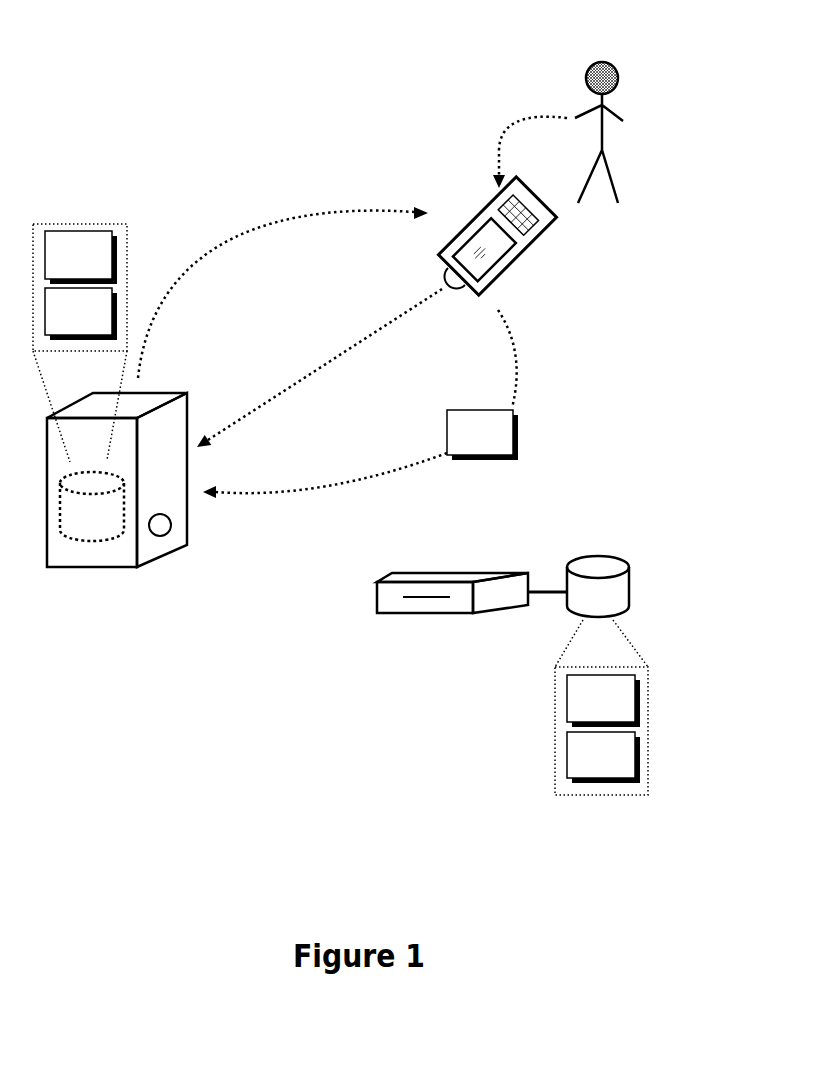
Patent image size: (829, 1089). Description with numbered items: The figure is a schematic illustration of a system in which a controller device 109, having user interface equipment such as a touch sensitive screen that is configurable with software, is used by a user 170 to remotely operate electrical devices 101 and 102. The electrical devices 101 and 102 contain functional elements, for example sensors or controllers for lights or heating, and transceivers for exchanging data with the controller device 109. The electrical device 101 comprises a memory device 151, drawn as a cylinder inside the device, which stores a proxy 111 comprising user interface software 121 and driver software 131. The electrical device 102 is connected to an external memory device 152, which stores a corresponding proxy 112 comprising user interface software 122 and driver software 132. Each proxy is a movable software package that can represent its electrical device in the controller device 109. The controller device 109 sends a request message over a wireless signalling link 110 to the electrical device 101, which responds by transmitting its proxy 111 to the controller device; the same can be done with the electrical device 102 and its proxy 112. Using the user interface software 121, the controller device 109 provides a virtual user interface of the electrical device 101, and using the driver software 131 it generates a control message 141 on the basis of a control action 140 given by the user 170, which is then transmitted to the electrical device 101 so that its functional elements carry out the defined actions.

The electrical device 101 is at (107, 567).
The electrical device 102 is at (463, 615).
The controller device 109 is at (518, 255).
The wireless signalling link 110 is at (323, 365).
The proxy 111 is at (75, 224).
The proxy 112 is at (610, 795).
The user interface software 121 is at (62, 268).
The user interface software 122 is at (584, 713).
The driver software 131 is at (62, 325).
The driver software 132 is at (584, 770).
The control action 140 is at (500, 130).
The control message 141 is at (463, 446).
The memory device 151 is at (75, 527).
The external memory device 152 is at (581, 608).
The user 170 is at (610, 60).